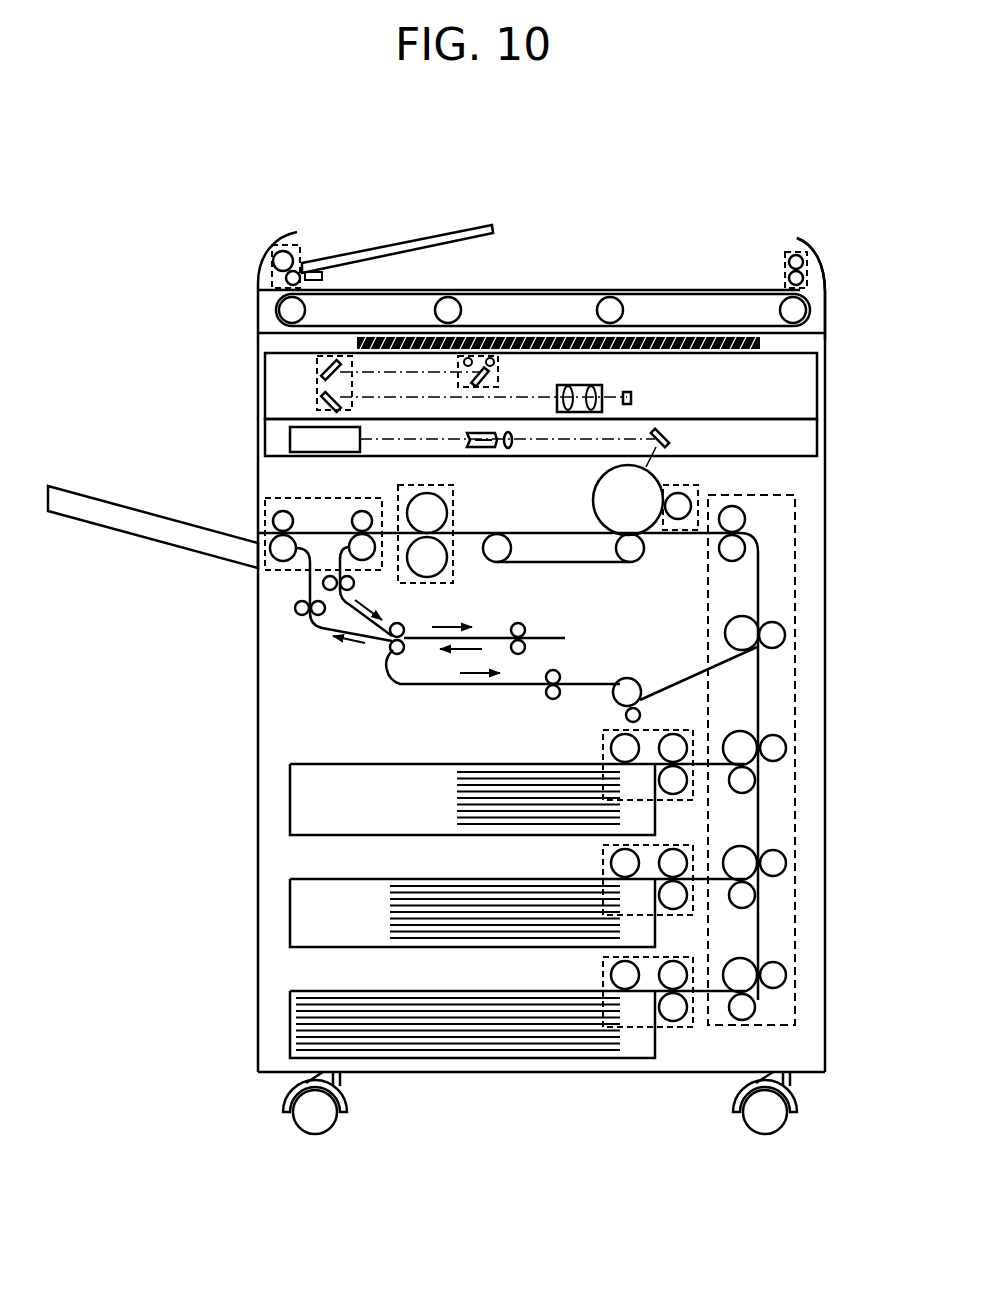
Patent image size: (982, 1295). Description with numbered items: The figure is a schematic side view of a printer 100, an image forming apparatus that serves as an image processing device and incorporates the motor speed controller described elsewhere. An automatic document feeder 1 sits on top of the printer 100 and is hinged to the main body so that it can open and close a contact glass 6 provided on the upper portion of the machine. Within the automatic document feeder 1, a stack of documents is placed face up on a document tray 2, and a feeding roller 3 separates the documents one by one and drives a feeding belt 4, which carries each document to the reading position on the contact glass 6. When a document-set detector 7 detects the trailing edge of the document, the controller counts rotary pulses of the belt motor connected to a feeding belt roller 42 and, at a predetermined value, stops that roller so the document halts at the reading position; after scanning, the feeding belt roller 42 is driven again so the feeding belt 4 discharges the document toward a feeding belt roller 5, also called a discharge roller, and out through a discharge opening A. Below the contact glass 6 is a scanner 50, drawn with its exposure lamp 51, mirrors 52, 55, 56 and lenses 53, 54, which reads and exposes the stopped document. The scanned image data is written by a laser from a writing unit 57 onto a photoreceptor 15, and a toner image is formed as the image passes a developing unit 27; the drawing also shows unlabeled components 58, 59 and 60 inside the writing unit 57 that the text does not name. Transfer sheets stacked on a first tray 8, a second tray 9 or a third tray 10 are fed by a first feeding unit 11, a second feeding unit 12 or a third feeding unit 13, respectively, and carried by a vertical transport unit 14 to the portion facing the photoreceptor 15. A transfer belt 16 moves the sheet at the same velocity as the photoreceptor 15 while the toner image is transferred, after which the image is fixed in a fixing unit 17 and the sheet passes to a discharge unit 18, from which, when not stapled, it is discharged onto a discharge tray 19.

The printer 100 is at (672, 178).
The automatic document feeder 1 is at (830, 292).
The document tray 2 is at (432, 238).
The feeding roller 3 is at (305, 246).
The document-set detector 7 is at (323, 276).
The feeding belt 4 is at (572, 322).
The feeding belt roller 42 is at (284, 303).
The feeding belt roller 5 is at (787, 252).
The discharge opening A is at (781, 264).
The contact glass 6 is at (765, 343).
The scanner 50 is at (800, 385).
The exposure lamp 51 is at (490, 357).
The mirror 52 is at (497, 378).
The lens 53 is at (600, 392).
The lens 54 is at (632, 398).
The mirror 55 is at (320, 366).
The mirror 56 is at (320, 402).
The writing unit 57 is at (800, 438).
The laser light source 58 is at (290, 436).
The lens group 59 is at (508, 456).
The reflecting mirror 60 is at (672, 438).
The photoreceptor 15 is at (594, 506).
The developing unit 27 is at (698, 490).
The transfer belt 16 is at (597, 565).
The vertical transport unit 14 is at (797, 532).
The fixing unit 17 is at (397, 487).
The discharge unit 18 is at (314, 497).
The discharge tray 19 is at (120, 538).
The first tray 8 is at (290, 796).
The second tray 9 is at (290, 911).
The third tray 10 is at (290, 1023).
The first feeding unit 11 is at (660, 800).
The second feeding unit 12 is at (660, 915).
The third feeding unit 13 is at (660, 1027).